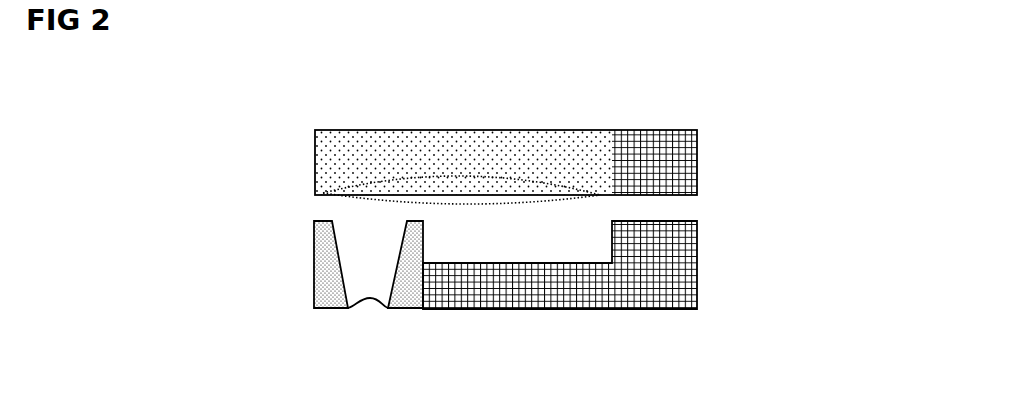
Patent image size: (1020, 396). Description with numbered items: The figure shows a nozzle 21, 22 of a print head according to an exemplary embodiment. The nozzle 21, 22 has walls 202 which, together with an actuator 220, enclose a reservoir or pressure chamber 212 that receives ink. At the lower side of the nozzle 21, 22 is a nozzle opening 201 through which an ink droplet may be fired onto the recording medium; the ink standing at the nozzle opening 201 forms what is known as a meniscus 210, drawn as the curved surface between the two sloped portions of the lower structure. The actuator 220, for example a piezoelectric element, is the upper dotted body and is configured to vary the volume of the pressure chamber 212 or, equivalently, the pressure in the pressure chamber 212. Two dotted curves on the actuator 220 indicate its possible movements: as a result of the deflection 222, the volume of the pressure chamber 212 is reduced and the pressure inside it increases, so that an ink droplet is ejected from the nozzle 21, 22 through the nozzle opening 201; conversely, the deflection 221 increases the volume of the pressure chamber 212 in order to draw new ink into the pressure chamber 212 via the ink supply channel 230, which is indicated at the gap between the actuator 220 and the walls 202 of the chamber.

The nozzle 21 is at (470, 135).
The nozzle 22 is at (470, 135).
The nozzle opening 201 is at (456, 290).
The walls 202 is at (697, 172).
The meniscus 210 is at (369, 300).
The pressure chamber 212 is at (518, 248).
The actuator 220 is at (475, 138).
The deflection 221 is at (400, 178).
The deflection 222 is at (532, 197).
The ink supply channel 230 is at (318, 210).